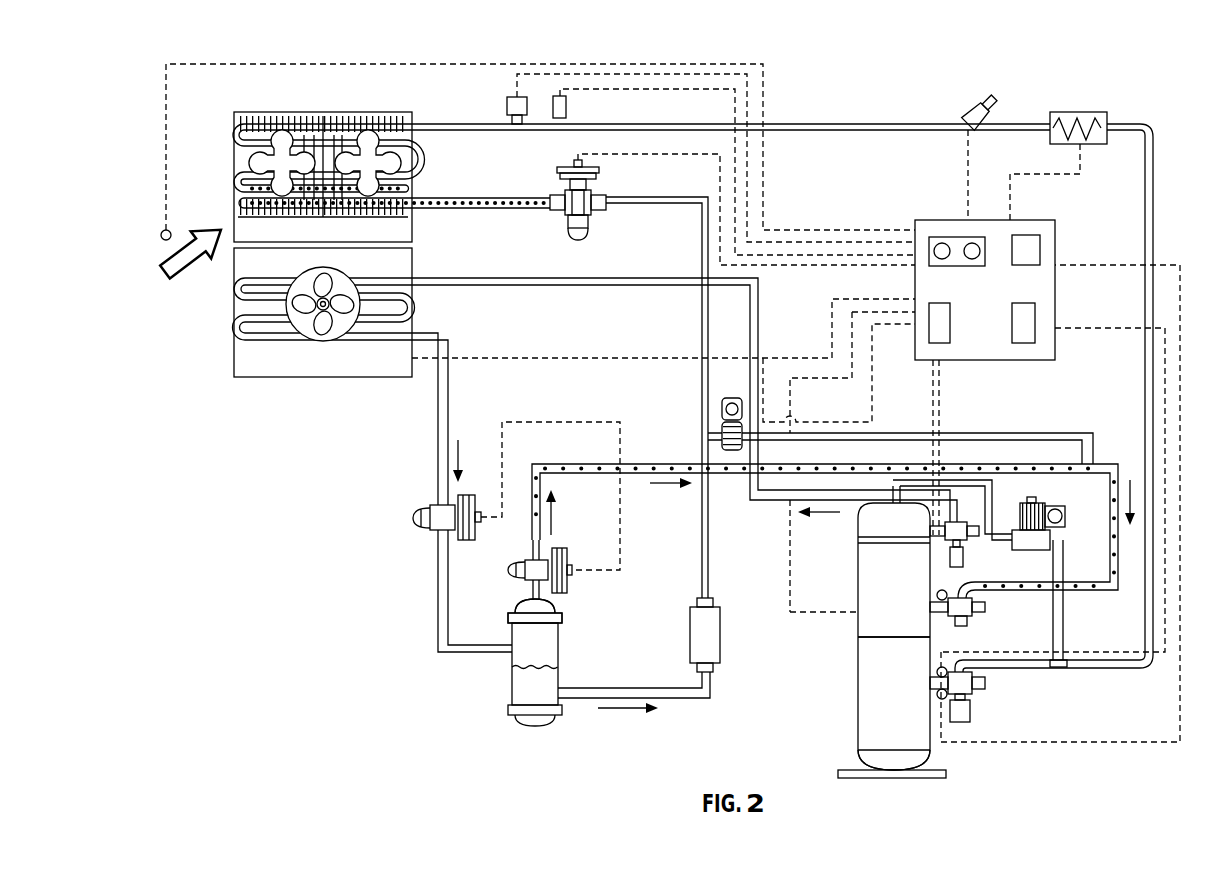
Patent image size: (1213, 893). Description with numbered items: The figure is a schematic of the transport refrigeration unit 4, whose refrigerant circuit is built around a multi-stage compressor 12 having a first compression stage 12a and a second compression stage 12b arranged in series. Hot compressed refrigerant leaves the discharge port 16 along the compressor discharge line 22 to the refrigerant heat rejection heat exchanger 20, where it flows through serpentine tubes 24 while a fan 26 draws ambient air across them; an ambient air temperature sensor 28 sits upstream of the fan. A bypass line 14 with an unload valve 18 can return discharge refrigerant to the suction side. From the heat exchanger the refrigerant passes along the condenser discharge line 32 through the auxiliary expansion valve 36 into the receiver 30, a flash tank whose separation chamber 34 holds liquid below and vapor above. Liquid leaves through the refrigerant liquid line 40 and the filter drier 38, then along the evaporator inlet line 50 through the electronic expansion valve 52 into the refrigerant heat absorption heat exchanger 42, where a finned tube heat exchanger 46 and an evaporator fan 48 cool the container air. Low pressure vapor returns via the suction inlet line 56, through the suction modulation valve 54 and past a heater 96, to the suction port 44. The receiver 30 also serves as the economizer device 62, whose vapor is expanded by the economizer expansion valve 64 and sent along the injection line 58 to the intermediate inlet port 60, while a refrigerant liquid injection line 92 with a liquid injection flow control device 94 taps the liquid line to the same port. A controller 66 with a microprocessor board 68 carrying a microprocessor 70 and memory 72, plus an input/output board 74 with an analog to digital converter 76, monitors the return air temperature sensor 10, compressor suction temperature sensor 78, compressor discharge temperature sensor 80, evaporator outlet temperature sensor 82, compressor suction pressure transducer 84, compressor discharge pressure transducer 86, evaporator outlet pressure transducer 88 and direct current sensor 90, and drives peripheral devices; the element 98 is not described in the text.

The transport refrigeration unit 4 is at (848, 70).
The return air temperature sensor 10 is at (526, 156).
The multi-stage compressor 12 is at (858, 697).
The first compression stage 12a is at (910, 713).
The second compression stage 12b is at (910, 592).
The bypass line 14 is at (993, 502).
The discharge port 16 is at (960, 533).
The unload valve 18 is at (1067, 517).
The refrigerant heat rejection heat exchanger 20 is at (412, 259).
The compressor discharge line 22 is at (496, 278).
The serpentine tubes 24 is at (407, 308).
The fan 26 is at (298, 307).
The ambient air temperature sensor 28 is at (490, 360).
The receiver 30 is at (512, 683).
The condenser discharge line 32 is at (437, 410).
The separation chamber 34 is at (547, 659).
The auxiliary expansion valve 36 is at (413, 517).
The filter drier 38 is at (717, 645).
The refrigerant liquid line 40 is at (688, 698).
The refrigerant heat absorption heat exchanger 42 is at (412, 117).
The suction port 44 is at (963, 685).
The finned tube heat exchanger 46 is at (236, 130).
The evaporator fan 48 is at (390, 164).
The evaporator inlet line 50 is at (495, 198).
The electronic expansion valve 52 is at (600, 172).
The suction modulation valve 54 is at (995, 105).
The suction inlet line 56 is at (830, 123).
The injection line 58 is at (567, 477).
The intermediate inlet port 60 is at (945, 617).
The economizer device 62 is at (562, 640).
The economizer expansion valve 64 is at (507, 571).
The controller 66 is at (1062, 240).
The microprocessor board 68 is at (1055, 295).
The microprocessor 70 is at (944, 237).
The memory 72 is at (970, 262).
The input/output board 74 is at (1035, 337).
The analog to digital converter 76 is at (950, 327).
The compressor suction temperature sensor 78 is at (1013, 742).
The compressor discharge temperature sensor 80 is at (940, 418).
The evaporator outlet temperature sensor 82 is at (566, 104).
The compressor suction pressure transducer 84 is at (1093, 650).
The compressor discharge pressure transducer 86 is at (933, 412).
The evaporator outlet pressure transducer 88 is at (507, 107).
The direct current sensor 90 is at (790, 562).
The refrigerant liquid injection line 92 is at (790, 610).
The liquid injection flow control device 94 is at (1068, 433).
The heater 96 is at (733, 398).
The heater 98 is at (1090, 112).